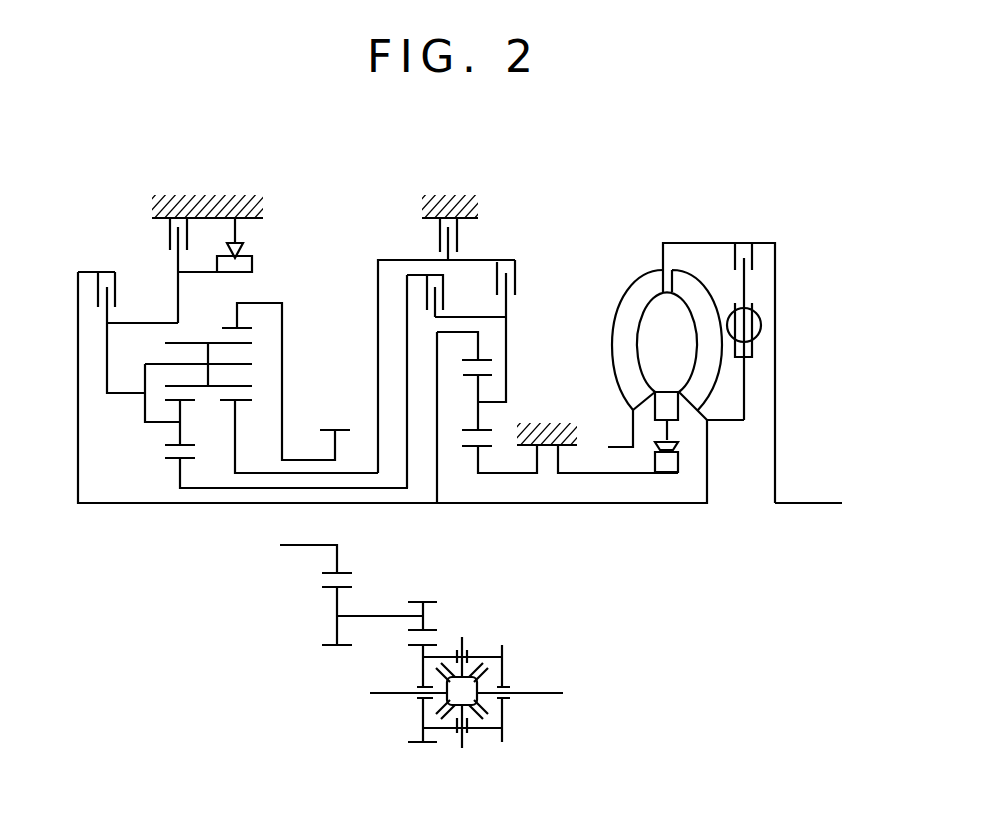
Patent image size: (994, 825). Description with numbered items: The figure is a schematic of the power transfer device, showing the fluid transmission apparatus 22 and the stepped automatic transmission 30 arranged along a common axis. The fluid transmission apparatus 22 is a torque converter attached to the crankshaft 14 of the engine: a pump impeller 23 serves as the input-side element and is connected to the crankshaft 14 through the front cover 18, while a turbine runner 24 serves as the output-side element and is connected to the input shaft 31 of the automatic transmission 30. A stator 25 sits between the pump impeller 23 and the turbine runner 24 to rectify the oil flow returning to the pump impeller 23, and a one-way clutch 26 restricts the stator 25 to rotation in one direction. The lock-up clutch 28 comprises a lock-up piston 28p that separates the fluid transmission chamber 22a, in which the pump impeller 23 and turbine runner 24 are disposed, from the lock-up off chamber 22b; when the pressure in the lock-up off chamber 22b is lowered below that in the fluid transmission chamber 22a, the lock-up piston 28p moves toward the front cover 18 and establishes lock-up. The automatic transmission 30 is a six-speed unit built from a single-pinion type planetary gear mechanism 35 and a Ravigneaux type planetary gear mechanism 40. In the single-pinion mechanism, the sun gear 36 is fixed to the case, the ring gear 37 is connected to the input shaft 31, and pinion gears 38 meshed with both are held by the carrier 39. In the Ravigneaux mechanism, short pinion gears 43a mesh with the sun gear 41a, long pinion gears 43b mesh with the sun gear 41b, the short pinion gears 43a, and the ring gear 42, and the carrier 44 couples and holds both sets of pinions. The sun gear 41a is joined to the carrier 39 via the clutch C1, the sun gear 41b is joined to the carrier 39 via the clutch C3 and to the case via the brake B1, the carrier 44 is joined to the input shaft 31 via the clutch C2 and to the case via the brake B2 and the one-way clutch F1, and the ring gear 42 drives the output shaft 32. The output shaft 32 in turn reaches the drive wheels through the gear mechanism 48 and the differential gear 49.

The crankshaft 14 is at (813, 503).
The front cover 18 is at (775, 337).
The fluid transmission apparatus 22 is at (664, 208).
The fluid transmission chamber 22a is at (733, 278).
The lock-up off chamber 22b is at (772, 303).
The pump impeller 23 is at (645, 273).
The turbine runner 24 is at (680, 272).
The stator 25 is at (678, 420).
The one-way clutch 26 is at (678, 465).
The lock-up clutch 28 is at (772, 260).
The lock-up piston 28p is at (747, 393).
The automatic transmission 30 is at (594, 216).
The input shaft 31 is at (633, 503).
The output shaft 32 is at (303, 458).
The single-pinion type planetary gear mechanism 35 is at (543, 329).
The sun gear 36 is at (478, 453).
The ring gear 37 is at (482, 353).
The pinion gears 38 is at (478, 422).
The carrier 39 is at (507, 402).
The Ravigneaux type planetary gear mechanism 40 is at (128, 477).
The sun gear 41a is at (178, 470).
The sun gear 41b is at (227, 402).
The ring gear 42 is at (248, 327).
The short pinion gears 43a is at (178, 433).
The long pinion gears 43b is at (173, 341).
The carrier 44 is at (127, 393).
The gear mechanism 48 is at (380, 600).
The differential gear 49 is at (490, 625).
The clutch C1 is at (428, 283).
The clutch C2 is at (102, 272).
The clutch C3 is at (515, 280).
The brake B1 is at (460, 242).
The brake B2 is at (168, 243).
The one-way clutch F1 is at (243, 250).